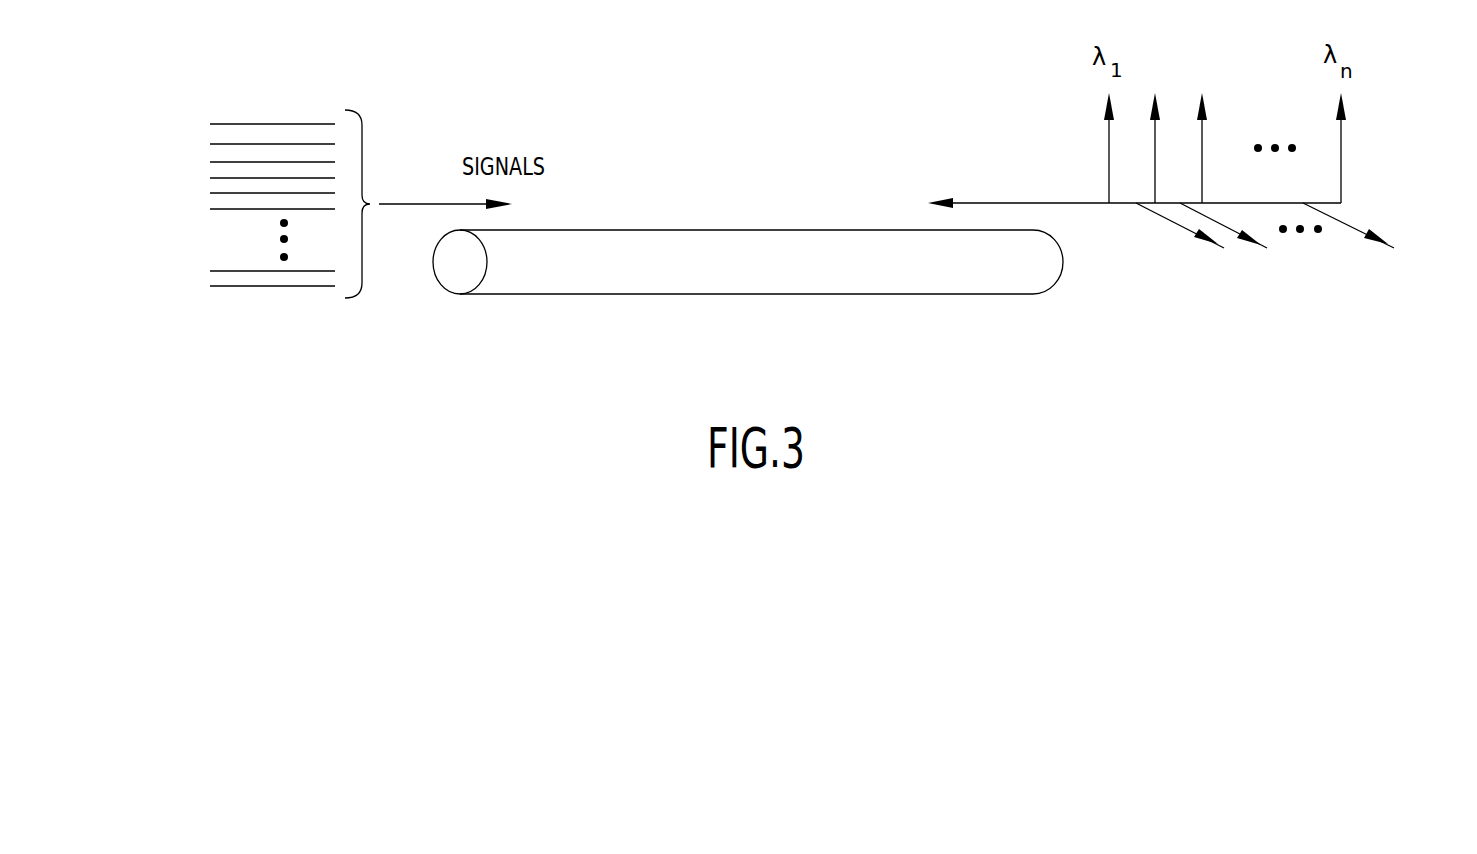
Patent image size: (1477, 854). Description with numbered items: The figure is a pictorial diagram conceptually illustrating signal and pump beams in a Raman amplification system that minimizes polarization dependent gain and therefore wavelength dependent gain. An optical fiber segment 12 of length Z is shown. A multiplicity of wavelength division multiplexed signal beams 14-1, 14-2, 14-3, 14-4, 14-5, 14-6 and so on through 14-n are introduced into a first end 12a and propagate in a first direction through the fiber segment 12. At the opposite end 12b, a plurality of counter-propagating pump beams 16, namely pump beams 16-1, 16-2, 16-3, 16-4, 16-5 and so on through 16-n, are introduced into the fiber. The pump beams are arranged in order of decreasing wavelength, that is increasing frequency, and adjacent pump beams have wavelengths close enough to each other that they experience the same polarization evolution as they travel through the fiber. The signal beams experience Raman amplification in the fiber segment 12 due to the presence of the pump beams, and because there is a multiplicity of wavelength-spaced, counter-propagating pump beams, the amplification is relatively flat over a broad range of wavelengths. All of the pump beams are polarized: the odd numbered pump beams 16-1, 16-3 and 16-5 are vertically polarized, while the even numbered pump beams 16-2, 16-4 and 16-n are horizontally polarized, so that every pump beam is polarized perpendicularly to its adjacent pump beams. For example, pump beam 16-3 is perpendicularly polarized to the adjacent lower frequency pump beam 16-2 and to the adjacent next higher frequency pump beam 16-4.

The optical fiber segment 12 is at (705, 294).
The first end 12a is at (455, 272).
The opposite end 12b is at (1063, 268).
The signal beam 14-1 is at (285, 124).
The signal beam 14-2 is at (238, 144).
The signal beam 14-3 is at (238, 162).
The signal beam 14-4 is at (233, 178).
The signal beam 14-5 is at (228, 193).
The signal beam 14-6 is at (228, 209).
The signal beam 14-n is at (312, 286).
The pump beams 16 is at (1010, 203).
The pump beam 16-1 is at (1109, 145).
The pump beam 16-2 is at (1160, 218).
The pump beam 16-3 is at (1155, 173).
The pump beam 16-4 is at (1203, 216).
The pump beam 16-5 is at (1202, 147).
The pump beam 16-n is at (1341, 158).